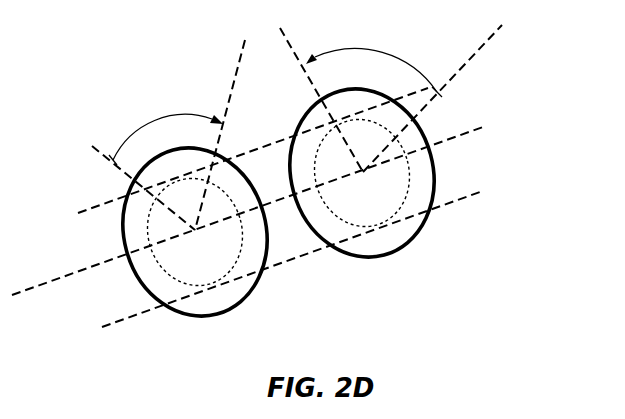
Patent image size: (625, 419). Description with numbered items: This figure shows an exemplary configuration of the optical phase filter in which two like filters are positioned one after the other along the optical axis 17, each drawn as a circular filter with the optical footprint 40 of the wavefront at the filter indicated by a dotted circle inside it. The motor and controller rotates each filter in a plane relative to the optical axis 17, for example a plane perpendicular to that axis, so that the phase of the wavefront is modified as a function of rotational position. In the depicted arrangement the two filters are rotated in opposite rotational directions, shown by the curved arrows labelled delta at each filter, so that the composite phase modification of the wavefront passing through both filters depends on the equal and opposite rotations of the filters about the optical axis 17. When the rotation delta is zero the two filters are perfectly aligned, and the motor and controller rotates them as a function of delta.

The optical axis 17 is at (468, 133).
The optical footprint 40 is at (160, 268).